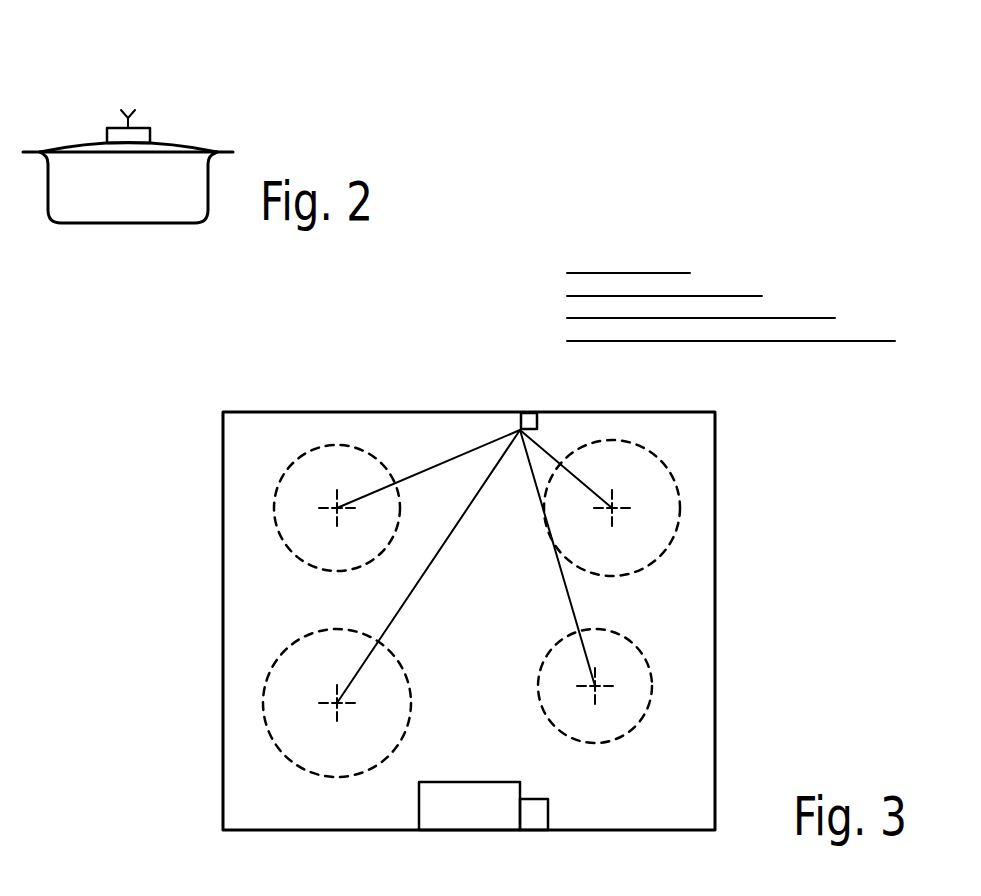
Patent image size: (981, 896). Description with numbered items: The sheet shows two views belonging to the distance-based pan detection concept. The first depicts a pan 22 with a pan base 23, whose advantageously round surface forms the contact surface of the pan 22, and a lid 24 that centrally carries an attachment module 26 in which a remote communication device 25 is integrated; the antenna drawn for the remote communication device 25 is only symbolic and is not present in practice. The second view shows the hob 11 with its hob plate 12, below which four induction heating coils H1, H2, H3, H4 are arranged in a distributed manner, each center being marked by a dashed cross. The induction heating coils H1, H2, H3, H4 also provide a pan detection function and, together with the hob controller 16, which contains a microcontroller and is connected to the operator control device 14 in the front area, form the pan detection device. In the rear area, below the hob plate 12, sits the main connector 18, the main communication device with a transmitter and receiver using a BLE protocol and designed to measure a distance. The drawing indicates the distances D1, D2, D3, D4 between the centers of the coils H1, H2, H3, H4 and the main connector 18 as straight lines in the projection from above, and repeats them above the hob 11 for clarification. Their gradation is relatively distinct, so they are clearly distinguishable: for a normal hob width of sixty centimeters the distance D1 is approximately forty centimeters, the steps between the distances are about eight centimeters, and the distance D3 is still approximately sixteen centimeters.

In FIG. 3, the hob 11 is at (795, 452).
In FIG. 3, the hob plate 12 is at (708, 430).
In FIG. 3, the operator control device 14 is at (460, 818).
In FIG. 3, the hob controller 16 is at (548, 816).
In FIG. 3, the main connector 18 is at (538, 413).
In FIG. 2, the pan 22 is at (252, 152).
In FIG. 2, the pan base 23 is at (90, 224).
In FIG. 2, the lid 24 is at (192, 146).
In FIG. 2, the remote communication device 25 is at (138, 105).
In FIG. 2, the attachment module 26 is at (107, 135).
In FIG. 3, the induction heating coil H1 is at (263, 707).
In FIG. 3, the induction heating coil H2 is at (273, 506).
In FIG. 3, the induction heating coil H3 is at (680, 508).
In FIG. 3, the induction heating coil H4 is at (653, 683).
In FIG. 3, the distance D1 is at (633, 515).
In FIG. 3, the distance D2 is at (567, 395).
In FIG. 3, the distance D3 is at (623, 383).
In FIG. 3, the distance D4 is at (694, 495).